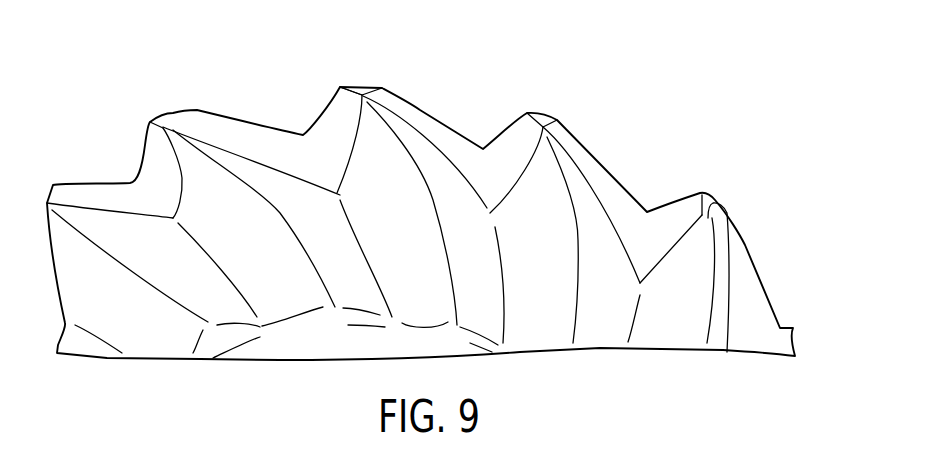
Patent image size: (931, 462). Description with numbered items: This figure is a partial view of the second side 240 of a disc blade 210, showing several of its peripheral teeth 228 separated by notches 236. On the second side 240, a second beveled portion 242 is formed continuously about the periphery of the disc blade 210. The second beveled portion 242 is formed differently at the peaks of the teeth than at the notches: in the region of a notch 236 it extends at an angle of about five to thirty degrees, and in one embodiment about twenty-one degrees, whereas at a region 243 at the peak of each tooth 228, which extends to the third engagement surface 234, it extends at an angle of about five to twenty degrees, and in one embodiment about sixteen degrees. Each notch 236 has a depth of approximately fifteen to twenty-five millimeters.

The disc blade 210 is at (93, 135).
The third engagement surface 234 is at (172, 113).
The region at the peak of each tooth 243 is at (370, 85).
The tooth 228 is at (425, 133).
The second beveled portion 242 is at (590, 168).
The notch 236 is at (647, 210).
The second side 240 is at (677, 292).